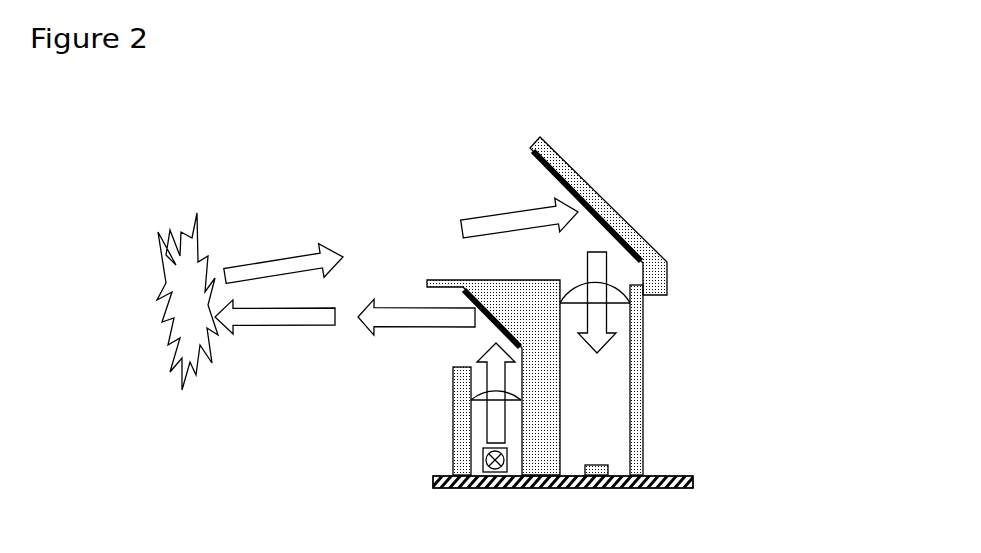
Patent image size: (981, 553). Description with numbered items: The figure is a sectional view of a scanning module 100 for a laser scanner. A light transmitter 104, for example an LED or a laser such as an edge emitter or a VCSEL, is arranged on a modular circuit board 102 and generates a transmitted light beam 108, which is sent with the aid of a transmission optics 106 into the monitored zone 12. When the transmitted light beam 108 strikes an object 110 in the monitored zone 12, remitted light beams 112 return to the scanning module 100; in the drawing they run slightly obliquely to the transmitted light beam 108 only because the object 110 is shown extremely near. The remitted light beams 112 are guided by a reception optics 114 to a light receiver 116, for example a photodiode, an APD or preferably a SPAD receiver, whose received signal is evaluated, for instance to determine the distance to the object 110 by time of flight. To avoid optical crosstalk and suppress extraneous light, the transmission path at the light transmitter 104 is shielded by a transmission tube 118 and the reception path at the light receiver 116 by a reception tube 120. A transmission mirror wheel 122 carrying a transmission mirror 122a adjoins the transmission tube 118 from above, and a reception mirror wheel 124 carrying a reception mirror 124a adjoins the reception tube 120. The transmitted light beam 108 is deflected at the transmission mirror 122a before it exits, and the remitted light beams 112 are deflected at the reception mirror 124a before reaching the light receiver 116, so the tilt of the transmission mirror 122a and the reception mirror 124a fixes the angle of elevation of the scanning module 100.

The monitored zone 12 is at (274, 97).
The scanning module 100 is at (775, 148).
The modular circuit board 102 is at (616, 500).
The light transmitter 104 is at (443, 456).
The transmission optics 106 is at (438, 393).
The transmitted light beam 108 is at (345, 352).
The object 110 is at (136, 301).
The remitted light beams 112 is at (293, 230).
The reception optics 114 is at (635, 305).
The light receiver 116 is at (654, 445).
The transmission tube 118 is at (402, 421).
The reception tube 120 is at (706, 380).
The transmission mirror wheel 122 is at (469, 351).
The transmission mirror 122a is at (504, 295).
The reception mirror wheel 124 is at (609, 202).
The reception mirror 124a is at (587, 185).